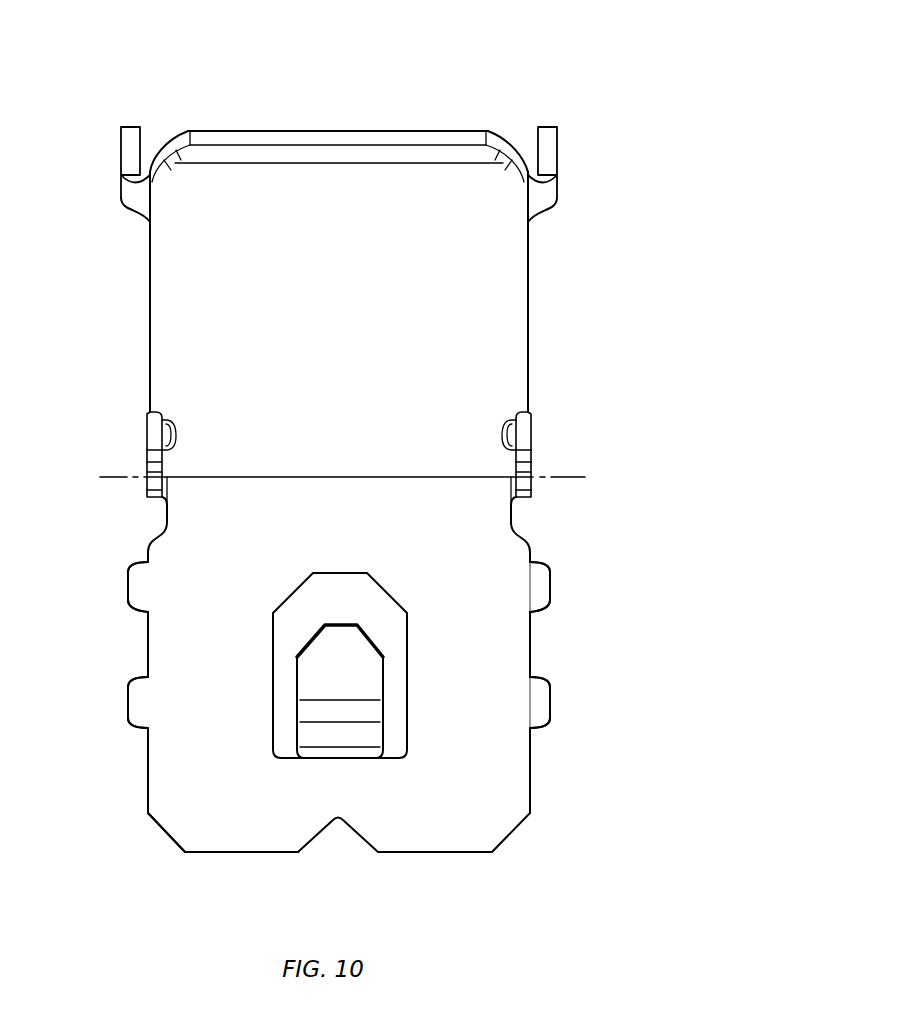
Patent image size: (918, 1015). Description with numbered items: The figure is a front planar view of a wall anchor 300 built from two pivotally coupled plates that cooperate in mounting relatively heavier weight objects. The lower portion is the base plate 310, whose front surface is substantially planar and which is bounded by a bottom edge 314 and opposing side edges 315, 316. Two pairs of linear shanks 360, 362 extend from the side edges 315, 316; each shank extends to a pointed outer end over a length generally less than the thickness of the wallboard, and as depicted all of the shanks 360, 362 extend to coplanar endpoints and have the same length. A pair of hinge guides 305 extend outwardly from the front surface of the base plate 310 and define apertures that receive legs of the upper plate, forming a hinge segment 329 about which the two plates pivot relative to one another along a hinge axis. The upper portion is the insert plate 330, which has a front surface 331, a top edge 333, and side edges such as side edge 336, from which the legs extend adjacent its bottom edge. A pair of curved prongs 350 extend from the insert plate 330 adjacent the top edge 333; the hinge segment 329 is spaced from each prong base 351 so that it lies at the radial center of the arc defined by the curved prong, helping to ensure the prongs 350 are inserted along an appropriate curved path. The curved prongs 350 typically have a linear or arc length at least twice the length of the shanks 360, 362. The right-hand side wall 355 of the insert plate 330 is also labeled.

The wall anchor 300 is at (519, 48).
The hinge guides 305 is at (152, 452).
The base plate 310 is at (485, 808).
The bottom edge 314 is at (215, 853).
The side edge 315 is at (530, 644).
The side edge 316 is at (148, 644).
The hinge segment 329 is at (467, 480).
The insert plate 330 is at (498, 320).
The front surface 331 is at (385, 200).
The top edge 333 is at (262, 140).
The side edge 336 is at (150, 316).
The curved prongs 350 is at (132, 140).
The prong base 351 is at (132, 197).
The right side wall 355 is at (530, 268).
The linear shanks 360 is at (138, 587).
The linear shanks 362 is at (138, 704).